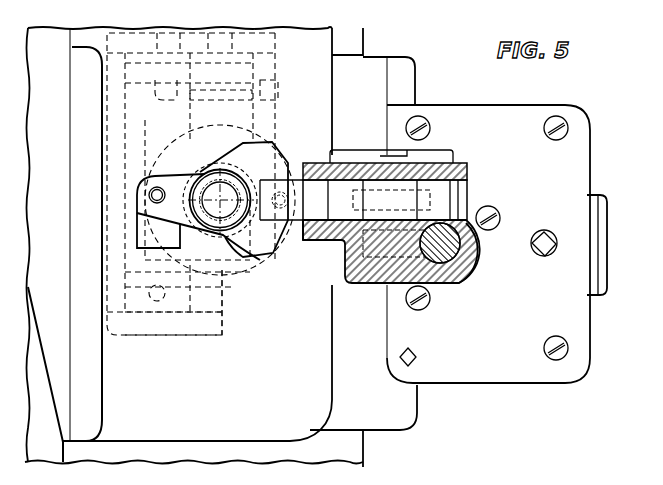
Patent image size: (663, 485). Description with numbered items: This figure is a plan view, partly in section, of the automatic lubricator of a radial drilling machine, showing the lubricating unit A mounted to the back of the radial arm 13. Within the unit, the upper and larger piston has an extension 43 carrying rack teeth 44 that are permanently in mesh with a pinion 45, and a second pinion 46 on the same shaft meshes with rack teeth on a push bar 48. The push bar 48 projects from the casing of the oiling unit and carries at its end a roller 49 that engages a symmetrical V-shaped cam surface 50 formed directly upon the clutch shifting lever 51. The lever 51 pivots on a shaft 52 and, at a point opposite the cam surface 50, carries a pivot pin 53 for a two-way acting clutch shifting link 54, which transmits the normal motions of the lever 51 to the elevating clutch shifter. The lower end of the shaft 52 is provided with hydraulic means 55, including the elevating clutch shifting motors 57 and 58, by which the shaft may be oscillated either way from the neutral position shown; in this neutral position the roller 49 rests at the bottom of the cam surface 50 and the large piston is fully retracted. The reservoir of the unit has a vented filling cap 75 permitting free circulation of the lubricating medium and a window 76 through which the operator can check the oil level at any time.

The radial arm 13 is at (360, 451).
The extension 43 is at (448, 252).
The rack teeth 44 is at (424, 257).
The pinion 45 is at (341, 258).
The second pinion 46 is at (424, 198).
The push bar 48 is at (341, 190).
The roller 49 is at (312, 236).
The cam surface 50 is at (292, 160).
The clutch shifting lever 51 is at (200, 172).
The shaft 52 is at (220, 212).
The pivot pin 53 is at (160, 187).
The clutch shifting link 54 is at (140, 237).
The hydraulic means 55 is at (224, 300).
The elevating clutch shifting motor 57 is at (138, 288).
The elevating clutch shifting motor 58 is at (255, 117).
The vented filling cap 75 is at (546, 237).
The window 76 is at (609, 246).
The lubricating unit A is at (452, 389).